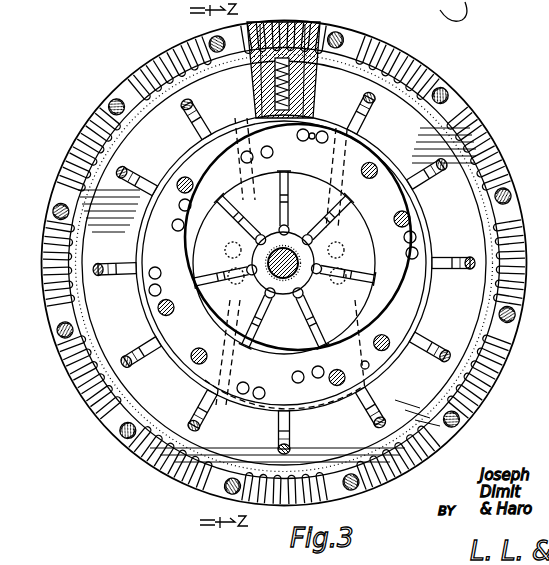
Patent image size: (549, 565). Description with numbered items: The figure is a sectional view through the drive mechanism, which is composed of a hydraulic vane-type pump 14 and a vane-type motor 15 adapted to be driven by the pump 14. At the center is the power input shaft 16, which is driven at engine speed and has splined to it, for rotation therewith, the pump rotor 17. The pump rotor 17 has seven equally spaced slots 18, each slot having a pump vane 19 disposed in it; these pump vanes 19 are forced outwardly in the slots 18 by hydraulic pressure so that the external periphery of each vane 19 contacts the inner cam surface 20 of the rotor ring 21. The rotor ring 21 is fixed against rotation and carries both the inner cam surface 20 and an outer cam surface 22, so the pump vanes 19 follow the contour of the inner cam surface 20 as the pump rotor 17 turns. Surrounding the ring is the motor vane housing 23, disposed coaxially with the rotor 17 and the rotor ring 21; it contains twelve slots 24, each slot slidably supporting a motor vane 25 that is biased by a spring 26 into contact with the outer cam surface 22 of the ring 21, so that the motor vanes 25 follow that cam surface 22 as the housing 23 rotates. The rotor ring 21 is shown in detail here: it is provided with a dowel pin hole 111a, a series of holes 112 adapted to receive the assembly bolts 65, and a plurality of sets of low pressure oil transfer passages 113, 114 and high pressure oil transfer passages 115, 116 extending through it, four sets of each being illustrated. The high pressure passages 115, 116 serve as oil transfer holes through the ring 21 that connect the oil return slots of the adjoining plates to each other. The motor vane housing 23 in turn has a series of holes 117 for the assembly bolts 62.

The hydraulic vane-type pump 14 is at (207, 374).
The vane-type motor 15 is at (480, 300).
The power input shaft 16 is at (283, 263).
The pump rotor 17 is at (362, 205).
The slots 18 is at (287, 207).
The pump vane 19 is at (318, 290).
The inner cam surface 20 is at (242, 186).
The rotor ring 21 is at (175, 162).
The outer cam surface 22 is at (195, 140).
The motor vane housing 23 is at (430, 125).
The slots 24 is at (375, 126).
The motor vane 25 is at (348, 124).
The spring 26 is at (355, 100).
The assembly bolts 62 is at (508, 200).
The assembly bolts 65 is at (226, 132).
The dowel pin hole 111a is at (368, 368).
The holes 112 is at (378, 165).
The low pressure oil transfer passage 113 is at (311, 304).
The low pressure oil transfer passage 114 is at (424, 308).
The high pressure oil transfer passage 115 is at (418, 238).
The high pressure oil transfer passage 116 is at (355, 135).
The holes 117 is at (340, 36).